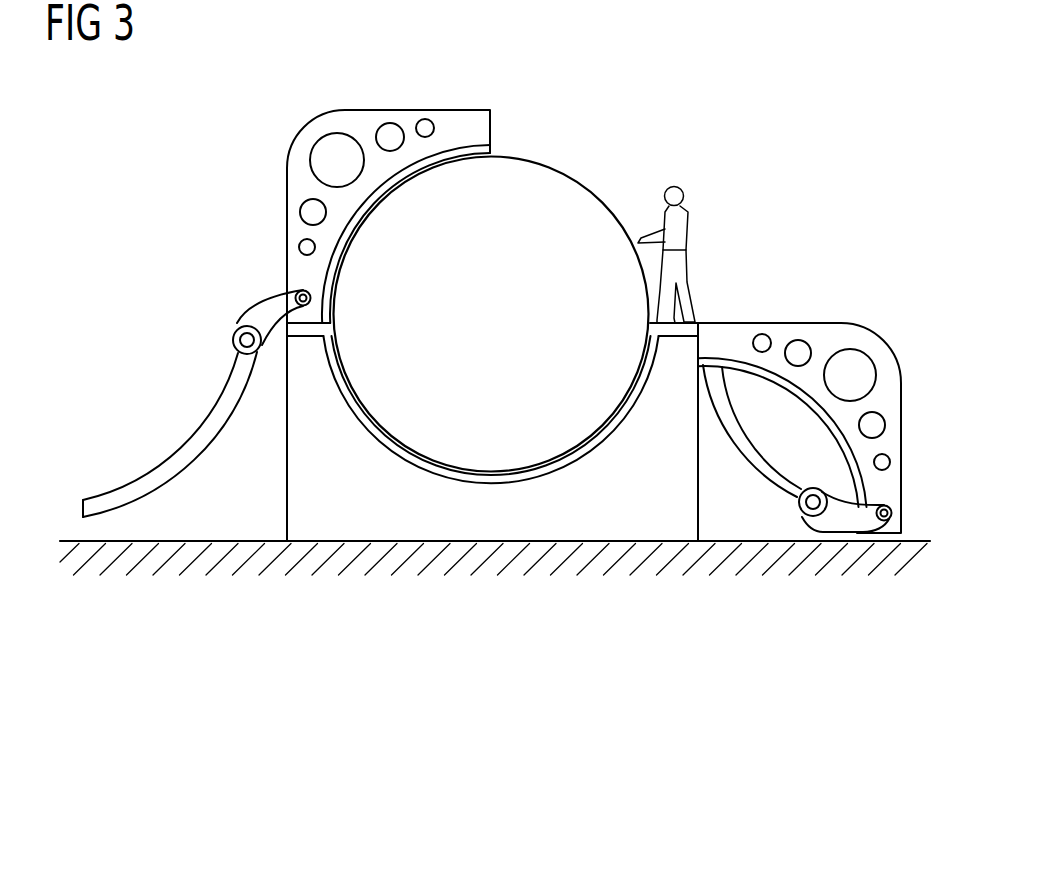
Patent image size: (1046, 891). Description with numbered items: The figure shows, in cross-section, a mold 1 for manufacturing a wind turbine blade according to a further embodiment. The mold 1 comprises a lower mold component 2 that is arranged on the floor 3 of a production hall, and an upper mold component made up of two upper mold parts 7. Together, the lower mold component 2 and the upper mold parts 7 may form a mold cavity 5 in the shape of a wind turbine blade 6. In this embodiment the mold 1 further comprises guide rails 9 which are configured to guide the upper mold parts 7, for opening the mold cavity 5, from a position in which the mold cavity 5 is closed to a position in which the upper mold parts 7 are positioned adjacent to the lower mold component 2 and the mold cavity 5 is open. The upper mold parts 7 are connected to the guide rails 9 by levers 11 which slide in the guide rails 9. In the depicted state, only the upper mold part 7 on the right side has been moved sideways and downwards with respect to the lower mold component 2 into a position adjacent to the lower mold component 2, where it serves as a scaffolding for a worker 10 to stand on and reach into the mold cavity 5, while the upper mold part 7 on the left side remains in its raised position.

The mold 1 is at (664, 101).
The lower mold component 2 is at (613, 528).
The floor 3 is at (488, 565).
The mold cavity 5 is at (382, 432).
The wind turbine blade 6 is at (542, 160).
The upper mold parts 7 is at (288, 177).
The guide rails 9 is at (165, 476).
The worker 10 is at (688, 228).
The levers 11 is at (250, 306).